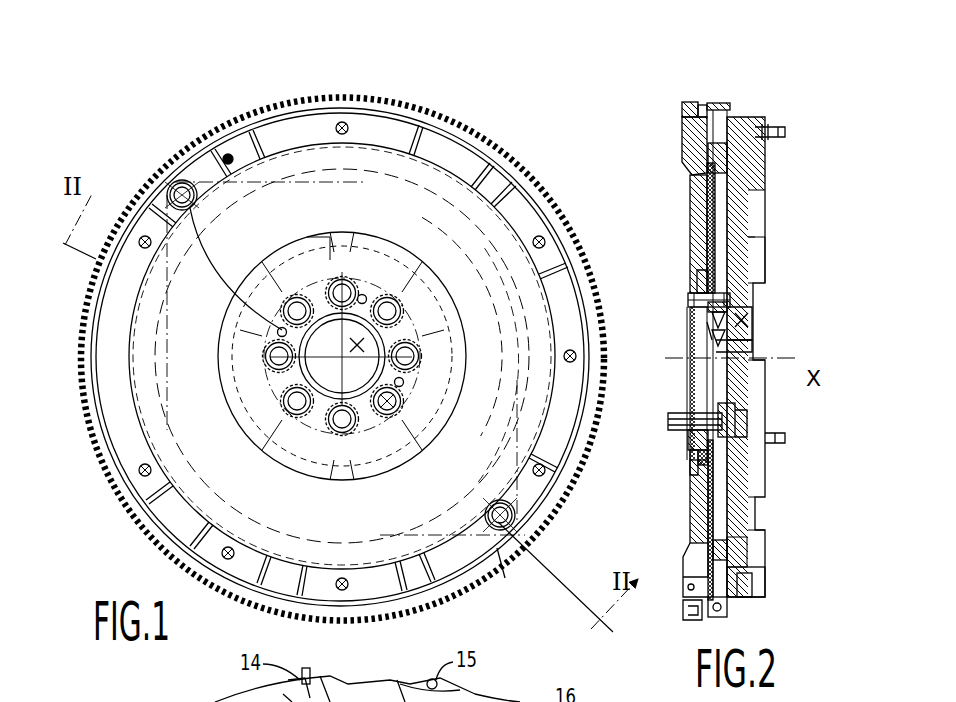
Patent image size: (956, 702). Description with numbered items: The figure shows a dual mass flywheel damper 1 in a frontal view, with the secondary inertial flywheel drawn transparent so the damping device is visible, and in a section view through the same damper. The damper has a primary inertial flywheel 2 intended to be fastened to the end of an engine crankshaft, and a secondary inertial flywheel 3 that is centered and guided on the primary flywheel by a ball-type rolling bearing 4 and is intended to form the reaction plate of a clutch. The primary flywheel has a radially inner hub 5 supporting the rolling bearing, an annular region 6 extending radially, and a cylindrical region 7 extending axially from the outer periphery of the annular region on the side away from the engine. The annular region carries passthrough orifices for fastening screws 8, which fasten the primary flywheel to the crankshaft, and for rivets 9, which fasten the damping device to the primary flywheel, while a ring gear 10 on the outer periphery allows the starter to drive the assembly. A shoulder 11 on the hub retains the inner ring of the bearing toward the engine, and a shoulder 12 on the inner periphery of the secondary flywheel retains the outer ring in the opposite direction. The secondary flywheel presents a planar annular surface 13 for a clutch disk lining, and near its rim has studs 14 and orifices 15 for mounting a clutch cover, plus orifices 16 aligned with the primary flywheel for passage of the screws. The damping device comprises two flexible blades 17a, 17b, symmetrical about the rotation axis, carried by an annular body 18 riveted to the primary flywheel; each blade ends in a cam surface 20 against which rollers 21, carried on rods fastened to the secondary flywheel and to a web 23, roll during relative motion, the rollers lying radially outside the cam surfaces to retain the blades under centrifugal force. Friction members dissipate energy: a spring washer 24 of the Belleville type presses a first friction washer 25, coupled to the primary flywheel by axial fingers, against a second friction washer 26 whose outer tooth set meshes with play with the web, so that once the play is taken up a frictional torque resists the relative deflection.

In FIG. 1, the dual mass flywheel damper 1 is at (519, 146).
In FIG. 2, the dual mass flywheel damper 1 is at (779, 92).
In FIG. 2, the primary inertial flywheel 2 is at (681, 138).
In FIG. 2, the secondary inertial flywheel 3 is at (756, 228).
In FIG. 2, the rolling bearing 4 is at (746, 334).
In FIG. 2, the radially inner hub 5 is at (750, 344).
In FIG. 2, the annular region 6 is at (692, 218).
In FIG. 2, the cylindrical region 7 is at (716, 101).
In FIG. 1, the fastening screws 8 is at (388, 312).
In FIG. 2, the fastening screws 8 is at (676, 413).
In FIG. 1, the rivets 9 is at (402, 386).
In FIG. 2, the rivets 9 is at (700, 298).
In FIG. 1, the ring gear 10 is at (266, 106).
In FIG. 2, the ring gear 10 is at (690, 100).
In FIG. 2, the shoulder 11 is at (735, 346).
In FIG. 2, the shoulder 12 is at (744, 320).
In FIG. 1, the planar annular surface 13 is at (126, 405).
In FIG. 2, the planar annular surface 13 is at (750, 195).
In FIG. 1, the studs 14 is at (223, 156).
In FIG. 2, the studs 14 is at (780, 126).
In FIG. 1, the orifices 15 is at (341, 122).
In FIG. 1, the orifices 16 is at (422, 358).
In FIG. 1, the flexible blade 17a is at (452, 196).
In FIG. 1, the flexible blade 17b is at (214, 506).
In FIG. 2, the flexible blade 17b is at (728, 556).
In FIG. 1, the annular body 18 is at (398, 428).
In FIG. 2, the annular body 18 is at (722, 300).
In FIG. 1, the cam surface 20 is at (518, 498).
In FIG. 1, the rollers 21 is at (512, 576).
In FIG. 2, the rollers 21 is at (732, 574).
In FIG. 2, the web 23 is at (698, 200).
In FIG. 1, the spring washer 24 is at (171, 188).
In FIG. 2, the spring washer 24 is at (700, 440).
In FIG. 2, the first friction washer 25 is at (704, 460).
In FIG. 2, the second friction washer 26 is at (696, 478).